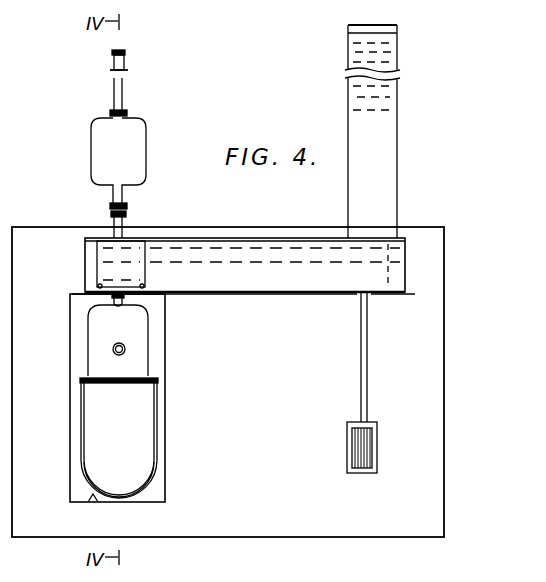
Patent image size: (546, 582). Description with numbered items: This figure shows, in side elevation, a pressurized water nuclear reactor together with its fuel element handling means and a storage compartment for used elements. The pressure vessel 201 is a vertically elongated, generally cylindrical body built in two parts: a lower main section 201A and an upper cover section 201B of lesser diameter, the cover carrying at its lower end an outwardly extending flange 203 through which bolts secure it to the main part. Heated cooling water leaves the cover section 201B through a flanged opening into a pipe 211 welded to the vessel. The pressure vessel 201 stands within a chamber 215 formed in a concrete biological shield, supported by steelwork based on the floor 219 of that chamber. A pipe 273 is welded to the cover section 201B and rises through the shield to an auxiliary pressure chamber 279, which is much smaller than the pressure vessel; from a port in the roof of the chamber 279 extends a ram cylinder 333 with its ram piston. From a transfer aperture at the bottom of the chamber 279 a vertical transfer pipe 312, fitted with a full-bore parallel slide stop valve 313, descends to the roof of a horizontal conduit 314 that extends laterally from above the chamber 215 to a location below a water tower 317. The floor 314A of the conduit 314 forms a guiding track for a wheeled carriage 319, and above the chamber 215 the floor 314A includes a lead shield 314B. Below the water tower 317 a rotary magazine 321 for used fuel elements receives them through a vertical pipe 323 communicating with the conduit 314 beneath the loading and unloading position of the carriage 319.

The ram cylinder 333 is at (125, 93).
The auxiliary pressure chamber 279 is at (146, 155).
The vertical transfer pipe 312 is at (126, 197).
The full-bore parallel slide stop valve 313 is at (126, 212).
The water tower 317 is at (397, 91).
The horizontal conduit 314 is at (85, 262).
The wheeled carriage 319 is at (145, 266).
The lead shield 314B is at (170, 291).
The floor of the conduit 314A is at (335, 283).
The vertical pipe 323 is at (367, 340).
The rotary magazine 321 is at (365, 432).
The pressure vessel 201 is at (160, 417).
The upper cover section 201B is at (148, 337).
The outwardly extending flange 203 is at (160, 378).
The lower main section 201A is at (158, 453).
The chamber 215 is at (160, 472).
The floor of the chamber 219 is at (94, 498).
The pipe 273 is at (112, 304).
The pipe 211 is at (112, 349).